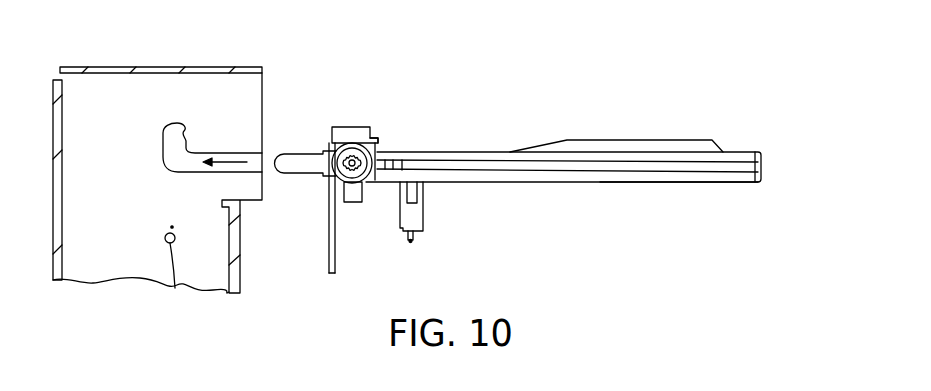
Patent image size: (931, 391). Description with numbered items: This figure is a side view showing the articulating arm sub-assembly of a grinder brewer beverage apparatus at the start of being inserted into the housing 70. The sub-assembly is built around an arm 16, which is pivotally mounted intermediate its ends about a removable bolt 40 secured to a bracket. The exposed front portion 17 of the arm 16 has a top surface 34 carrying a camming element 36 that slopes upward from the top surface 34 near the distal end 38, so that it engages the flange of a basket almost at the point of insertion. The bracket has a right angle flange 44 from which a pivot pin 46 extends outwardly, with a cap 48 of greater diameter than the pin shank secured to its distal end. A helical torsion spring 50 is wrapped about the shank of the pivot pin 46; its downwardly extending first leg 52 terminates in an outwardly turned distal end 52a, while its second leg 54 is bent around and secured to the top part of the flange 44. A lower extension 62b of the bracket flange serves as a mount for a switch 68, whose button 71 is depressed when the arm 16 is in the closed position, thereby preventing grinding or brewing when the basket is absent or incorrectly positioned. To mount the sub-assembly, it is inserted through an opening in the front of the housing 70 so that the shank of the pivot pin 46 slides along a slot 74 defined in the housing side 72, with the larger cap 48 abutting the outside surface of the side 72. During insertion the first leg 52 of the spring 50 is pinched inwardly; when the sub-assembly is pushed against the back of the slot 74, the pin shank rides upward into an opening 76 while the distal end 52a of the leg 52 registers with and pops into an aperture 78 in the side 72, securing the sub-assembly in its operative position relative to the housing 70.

The housing 70 is at (184, 62).
The housing sides 72 is at (97, 210).
The slots 74 is at (265, 152).
The openings 76 is at (173, 126).
The apertures 78 is at (181, 280).
The pivot pin 46 is at (337, 148).
The cap 48 is at (349, 165).
The helical torsion spring 50 is at (360, 127).
The right angle flange 44 is at (373, 137).
The second leg 54 is at (384, 145).
The top surface 34 is at (510, 152).
The camming element 36 is at (629, 140).
The distal end 38 is at (761, 157).
The front portion 17 is at (672, 184).
The arm 16 is at (774, 128).
The button 71 is at (414, 192).
The lower extension 62b is at (427, 212).
The switch 68 is at (416, 232).
The removable bolt 40 is at (353, 203).
The first leg 52 is at (336, 267).
The outwardly turned distal end 52a is at (329, 273).